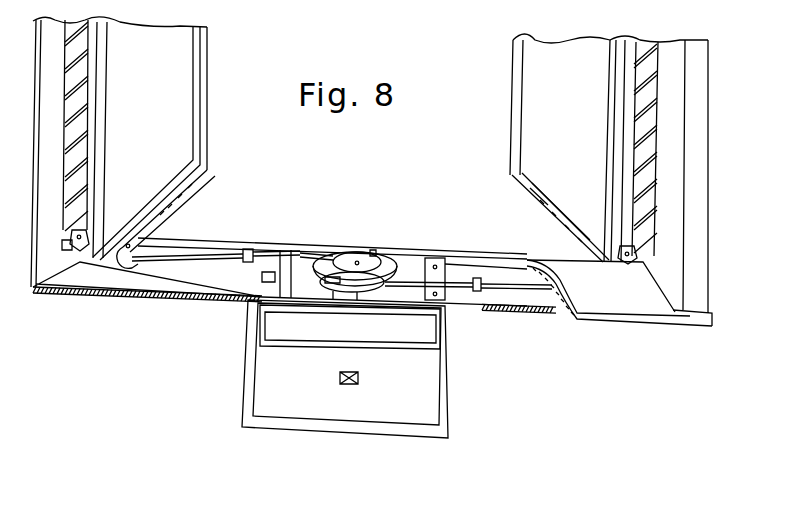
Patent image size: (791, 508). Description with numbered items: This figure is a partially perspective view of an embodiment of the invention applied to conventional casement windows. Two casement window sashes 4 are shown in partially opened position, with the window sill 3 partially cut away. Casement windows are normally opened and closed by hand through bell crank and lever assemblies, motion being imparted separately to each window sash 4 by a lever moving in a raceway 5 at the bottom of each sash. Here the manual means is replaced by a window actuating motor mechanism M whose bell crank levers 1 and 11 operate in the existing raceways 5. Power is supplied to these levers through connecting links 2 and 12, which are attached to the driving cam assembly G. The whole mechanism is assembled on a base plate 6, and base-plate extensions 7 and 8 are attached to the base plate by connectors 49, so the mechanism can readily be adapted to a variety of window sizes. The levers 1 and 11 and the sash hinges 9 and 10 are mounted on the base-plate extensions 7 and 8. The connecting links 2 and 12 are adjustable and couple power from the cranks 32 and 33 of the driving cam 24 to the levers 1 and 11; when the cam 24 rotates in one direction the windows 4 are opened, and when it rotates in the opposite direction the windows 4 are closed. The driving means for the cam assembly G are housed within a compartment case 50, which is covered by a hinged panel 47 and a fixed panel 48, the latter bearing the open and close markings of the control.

The bell crank lever 1 is at (145, 229).
The connecting link 2 is at (242, 250).
The window sill 3 is at (630, 314).
The casement window sash 4 is at (207, 131).
The raceway 5 is at (189, 185).
The base plate 6 is at (300, 291).
The base-plate extension 7 is at (178, 297).
The base-plate extension 8 is at (520, 297).
The sash hinge 9 is at (78, 251).
The sash hinge 10 is at (628, 256).
The bell crank lever 11 is at (550, 238).
The connecting link 12 is at (460, 238).
The driving cam 24 is at (357, 291).
The crank 32 is at (373, 250).
The crank 33 is at (333, 284).
The hinged panel 47 is at (428, 331).
The fixed panel 48 is at (430, 384).
The connector 49 is at (274, 278).
The compartment case 50 is at (449, 408).
The driving cam assembly G is at (389, 262).
The window actuating motor mechanism M is at (248, 370).